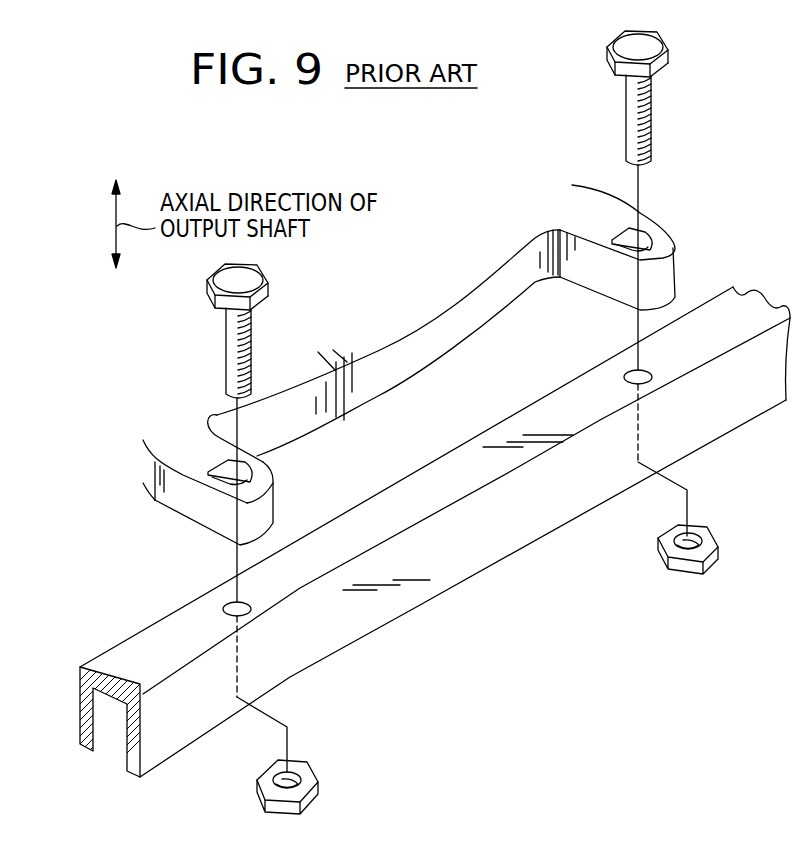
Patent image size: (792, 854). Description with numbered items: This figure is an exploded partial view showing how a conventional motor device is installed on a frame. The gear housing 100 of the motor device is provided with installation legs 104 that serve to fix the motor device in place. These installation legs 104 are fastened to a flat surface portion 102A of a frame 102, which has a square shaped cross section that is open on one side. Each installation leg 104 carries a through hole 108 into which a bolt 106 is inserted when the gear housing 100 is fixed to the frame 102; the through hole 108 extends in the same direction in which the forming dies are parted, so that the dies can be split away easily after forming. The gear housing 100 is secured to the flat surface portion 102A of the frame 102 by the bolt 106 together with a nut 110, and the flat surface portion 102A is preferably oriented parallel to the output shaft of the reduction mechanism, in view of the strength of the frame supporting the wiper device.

The gear housing 100 is at (477, 331).
The frame 102 is at (513, 548).
The flat surface portion 102A is at (463, 458).
The installation leg 104 is at (678, 266).
The bolt 106 is at (268, 282).
The through hole 108 is at (620, 248).
The nut 110 is at (260, 796).